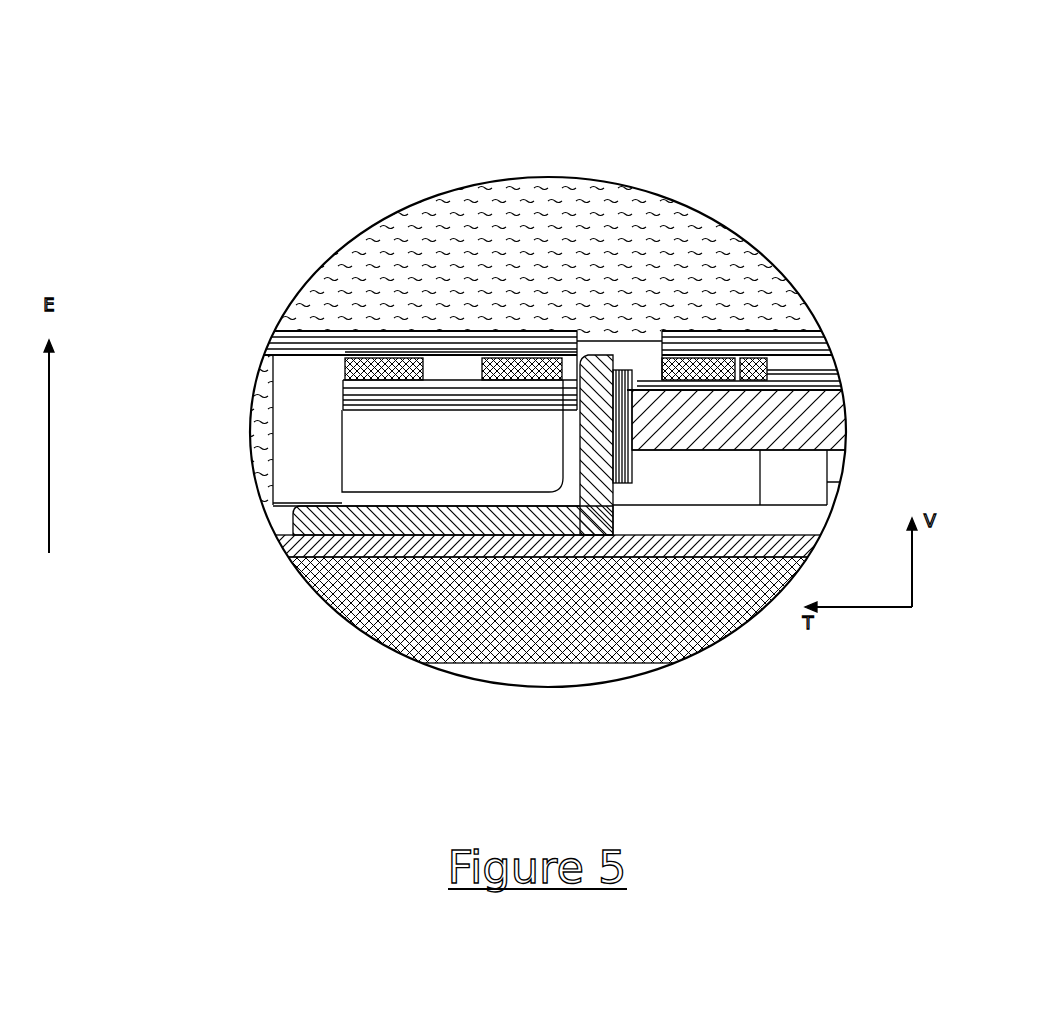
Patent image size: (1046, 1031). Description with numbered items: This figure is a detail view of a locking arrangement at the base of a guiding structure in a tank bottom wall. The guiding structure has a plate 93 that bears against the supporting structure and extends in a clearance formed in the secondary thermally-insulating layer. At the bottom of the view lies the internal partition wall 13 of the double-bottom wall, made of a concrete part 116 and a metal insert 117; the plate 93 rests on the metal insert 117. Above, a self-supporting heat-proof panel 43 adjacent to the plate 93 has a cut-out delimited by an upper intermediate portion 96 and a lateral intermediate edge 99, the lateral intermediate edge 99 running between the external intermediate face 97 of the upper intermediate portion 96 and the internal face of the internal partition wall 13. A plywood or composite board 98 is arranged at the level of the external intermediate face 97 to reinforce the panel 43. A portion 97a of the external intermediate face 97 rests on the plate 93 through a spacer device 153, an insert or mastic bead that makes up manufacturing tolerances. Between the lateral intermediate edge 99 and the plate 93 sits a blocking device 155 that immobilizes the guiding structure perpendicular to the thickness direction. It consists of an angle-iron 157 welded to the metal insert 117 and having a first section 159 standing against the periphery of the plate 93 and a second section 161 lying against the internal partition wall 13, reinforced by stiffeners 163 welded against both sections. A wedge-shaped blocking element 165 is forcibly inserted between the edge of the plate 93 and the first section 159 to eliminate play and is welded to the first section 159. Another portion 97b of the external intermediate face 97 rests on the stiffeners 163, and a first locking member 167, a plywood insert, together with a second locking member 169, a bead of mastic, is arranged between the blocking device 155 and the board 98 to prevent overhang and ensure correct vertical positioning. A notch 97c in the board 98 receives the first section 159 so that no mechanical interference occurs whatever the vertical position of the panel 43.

The internal partition wall 13 is at (727, 674).
The self-supporting heat-proof panel 43 is at (597, 212).
The plate 93 is at (817, 418).
The upper intermediate portion 96 is at (480, 290).
The external intermediate face 97 is at (560, 340).
The portion of the external intermediate face 97a is at (714, 357).
The portion of the external intermediate face 97b is at (450, 352).
The notch 97c is at (620, 338).
The plywood board 98 is at (307, 340).
The lateral intermediate edge 99 is at (272, 440).
The concrete part 116 is at (670, 623).
The metal insert 117 is at (718, 550).
The spacer device 153 is at (683, 362).
The blocking device 155 is at (375, 482).
The angle-iron 157 is at (525, 534).
The first section 159 is at (600, 447).
The second section 161 is at (447, 527).
The stiffener 163 is at (355, 447).
The blocking element 165 is at (846, 390).
The first locking member 167 is at (353, 390).
The second locking member 169 is at (363, 366).